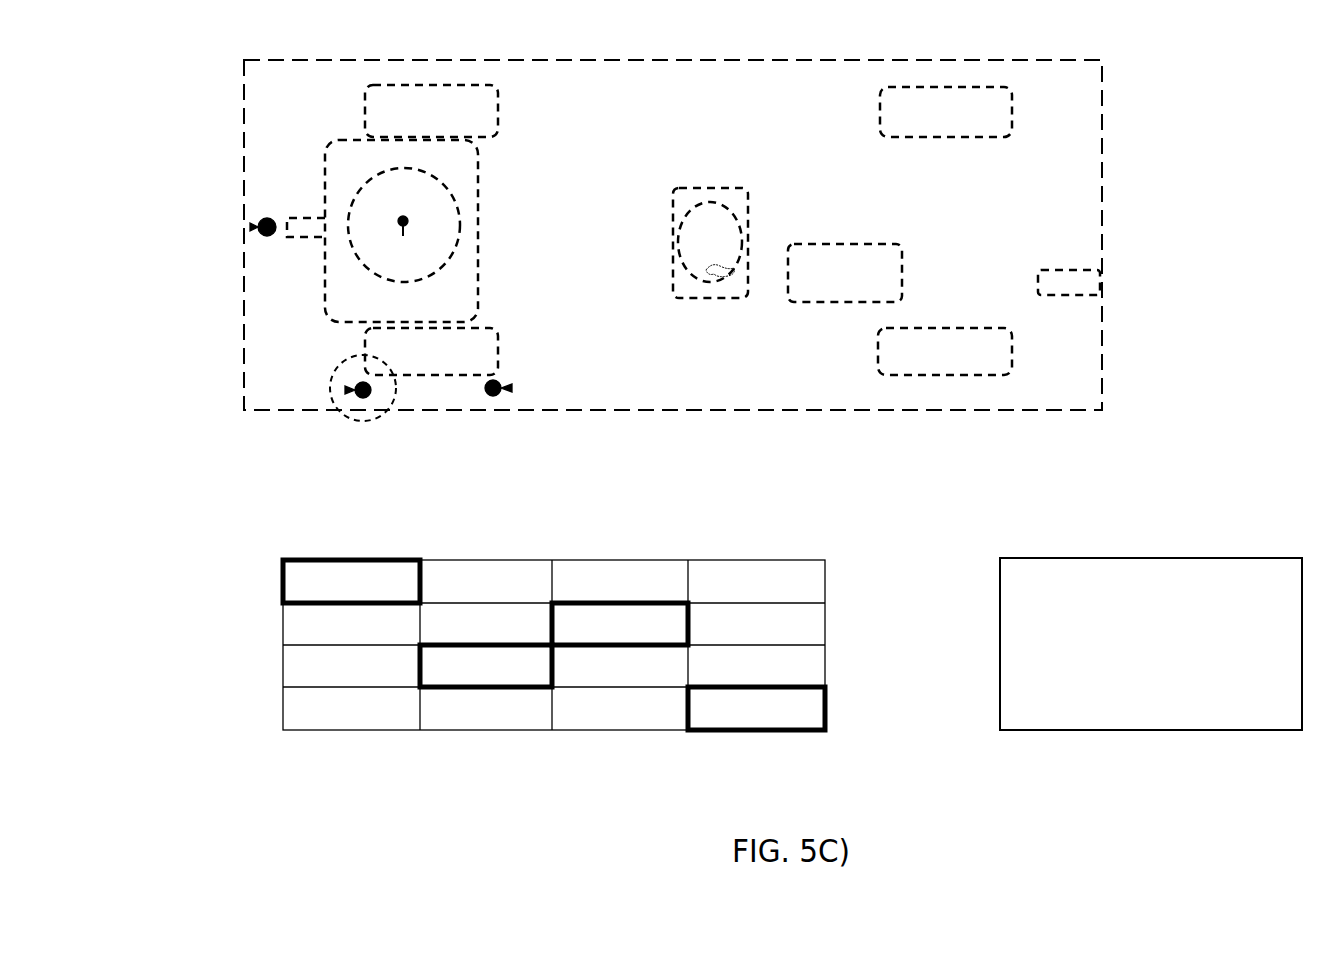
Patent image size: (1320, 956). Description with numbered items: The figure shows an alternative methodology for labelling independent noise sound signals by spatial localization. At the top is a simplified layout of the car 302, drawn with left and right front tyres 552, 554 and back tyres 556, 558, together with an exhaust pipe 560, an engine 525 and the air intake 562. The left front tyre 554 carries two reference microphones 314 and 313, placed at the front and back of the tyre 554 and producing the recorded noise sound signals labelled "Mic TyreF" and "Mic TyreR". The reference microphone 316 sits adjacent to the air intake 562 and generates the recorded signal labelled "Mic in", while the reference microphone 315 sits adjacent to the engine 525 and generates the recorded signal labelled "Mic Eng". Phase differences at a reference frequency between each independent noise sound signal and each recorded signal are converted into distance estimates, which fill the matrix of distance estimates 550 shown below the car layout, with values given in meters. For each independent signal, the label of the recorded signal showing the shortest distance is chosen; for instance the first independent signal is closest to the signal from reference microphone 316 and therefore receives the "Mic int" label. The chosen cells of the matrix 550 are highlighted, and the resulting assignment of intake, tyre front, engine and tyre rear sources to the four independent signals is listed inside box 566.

The car 302 is at (673, 207).
The reference microphone 313 is at (549, 373).
The reference microphone 314 is at (330, 404).
The reference microphone 315 is at (343, 255).
The reference microphone 316 is at (230, 236).
The engine 525 is at (449, 231).
The matrix of distance estimates 550 is at (487, 652).
The front tyre 552 is at (381, 104).
The left front tyre 554 is at (441, 395).
The back tyre 556 is at (895, 112).
The back tyre 558 is at (892, 351).
The exhaust pipe 560 is at (1030, 268).
The air intake 562 is at (260, 195).
The box 566 is at (1127, 628).